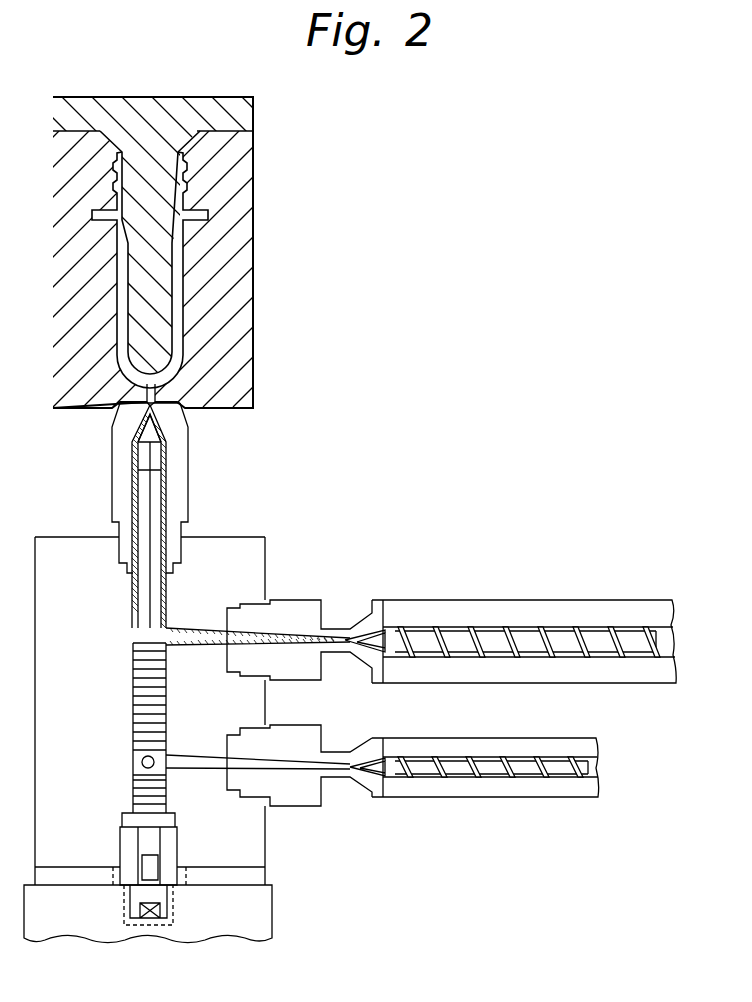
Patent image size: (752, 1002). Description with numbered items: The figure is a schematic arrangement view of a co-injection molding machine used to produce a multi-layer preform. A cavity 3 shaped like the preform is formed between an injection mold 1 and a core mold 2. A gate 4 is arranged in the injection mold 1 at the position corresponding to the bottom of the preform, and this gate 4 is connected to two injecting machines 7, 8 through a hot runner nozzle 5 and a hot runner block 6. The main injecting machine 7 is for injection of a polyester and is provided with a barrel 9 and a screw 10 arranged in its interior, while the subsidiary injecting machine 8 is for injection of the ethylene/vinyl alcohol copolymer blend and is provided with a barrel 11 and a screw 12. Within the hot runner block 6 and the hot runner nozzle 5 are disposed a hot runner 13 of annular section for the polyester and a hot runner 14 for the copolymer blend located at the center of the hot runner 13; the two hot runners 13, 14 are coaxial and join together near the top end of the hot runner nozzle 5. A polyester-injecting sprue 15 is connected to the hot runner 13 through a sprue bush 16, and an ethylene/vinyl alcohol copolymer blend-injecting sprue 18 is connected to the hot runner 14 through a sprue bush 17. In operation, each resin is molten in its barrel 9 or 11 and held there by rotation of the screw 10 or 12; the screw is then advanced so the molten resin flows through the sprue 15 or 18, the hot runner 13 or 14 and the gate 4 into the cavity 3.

The injection mold 1 is at (240, 245).
The core mold 2 is at (215, 115).
The cavity 3 is at (184, 296).
The gate 4 is at (153, 388).
The hot runner nozzle 5 is at (155, 410).
The hot runner block 6 is at (122, 466).
The main injecting machine 7 is at (510, 617).
The subsidiary injecting machine 8 is at (474, 779).
The barrel 9 is at (457, 615).
The screw 10 is at (548, 655).
The barrel 11 is at (455, 752).
The screw 12 is at (505, 772).
The hot runner 13 is at (166, 508).
The hot runner 14 is at (150, 511).
The polyester-injecting sprue 15 is at (200, 632).
The sprue bush 16 is at (305, 607).
The sprue bush 17 is at (305, 740).
The ethylene/vinyl alcohol copolymer blend-injecting sprue 18 is at (192, 762).